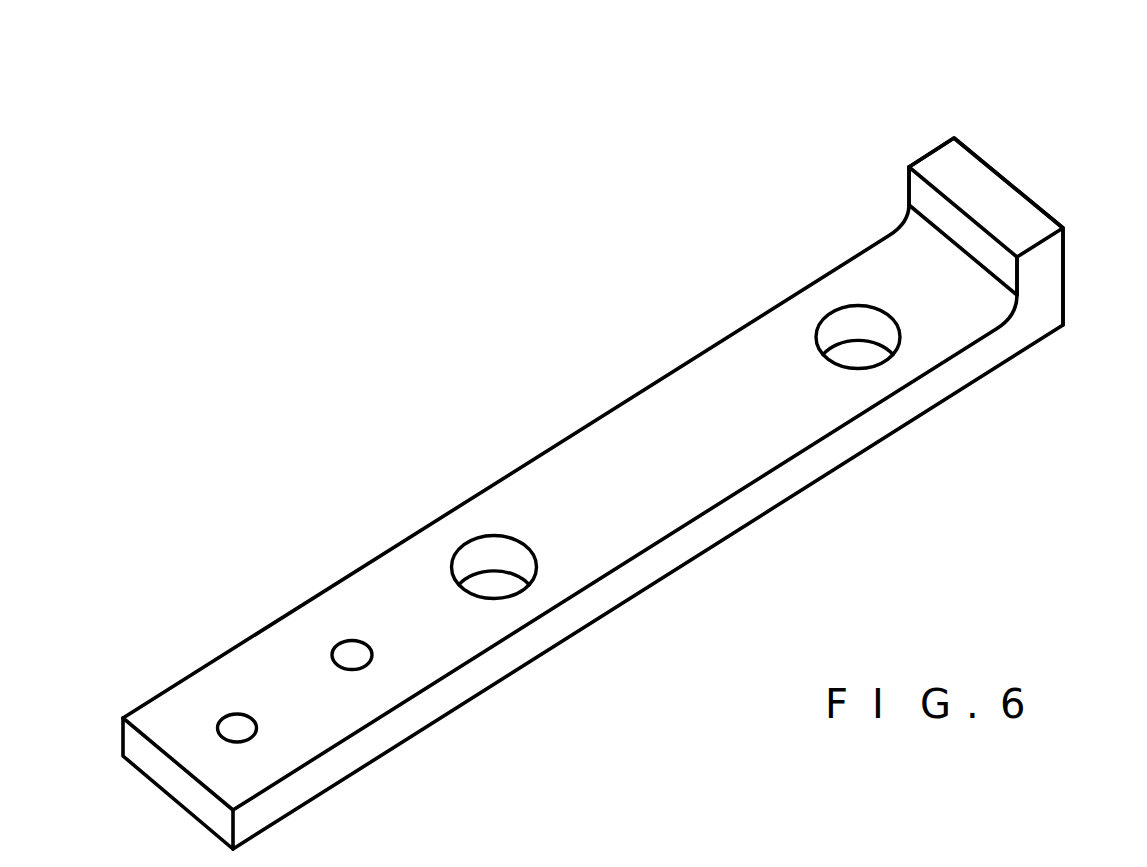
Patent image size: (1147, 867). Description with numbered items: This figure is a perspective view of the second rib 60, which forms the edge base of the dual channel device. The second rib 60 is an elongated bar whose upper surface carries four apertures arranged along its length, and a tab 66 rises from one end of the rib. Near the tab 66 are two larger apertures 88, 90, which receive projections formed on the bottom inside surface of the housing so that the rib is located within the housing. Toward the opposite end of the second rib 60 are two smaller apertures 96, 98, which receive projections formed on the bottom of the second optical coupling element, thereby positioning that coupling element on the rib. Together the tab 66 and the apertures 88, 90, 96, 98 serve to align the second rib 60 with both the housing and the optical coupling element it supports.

The second rib 60 is at (805, 488).
The tab 66 is at (929, 140).
The aperture 88 is at (818, 327).
The aperture 90 is at (460, 552).
The aperture 96 is at (337, 650).
The aperture 98 is at (223, 725).